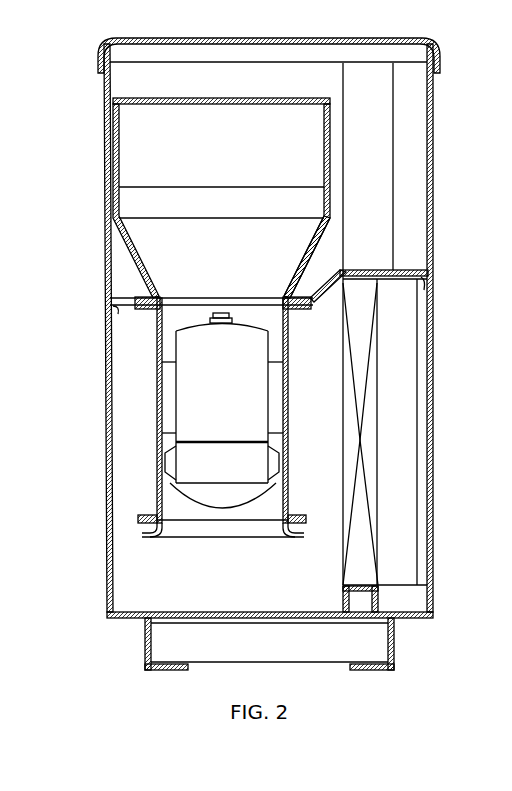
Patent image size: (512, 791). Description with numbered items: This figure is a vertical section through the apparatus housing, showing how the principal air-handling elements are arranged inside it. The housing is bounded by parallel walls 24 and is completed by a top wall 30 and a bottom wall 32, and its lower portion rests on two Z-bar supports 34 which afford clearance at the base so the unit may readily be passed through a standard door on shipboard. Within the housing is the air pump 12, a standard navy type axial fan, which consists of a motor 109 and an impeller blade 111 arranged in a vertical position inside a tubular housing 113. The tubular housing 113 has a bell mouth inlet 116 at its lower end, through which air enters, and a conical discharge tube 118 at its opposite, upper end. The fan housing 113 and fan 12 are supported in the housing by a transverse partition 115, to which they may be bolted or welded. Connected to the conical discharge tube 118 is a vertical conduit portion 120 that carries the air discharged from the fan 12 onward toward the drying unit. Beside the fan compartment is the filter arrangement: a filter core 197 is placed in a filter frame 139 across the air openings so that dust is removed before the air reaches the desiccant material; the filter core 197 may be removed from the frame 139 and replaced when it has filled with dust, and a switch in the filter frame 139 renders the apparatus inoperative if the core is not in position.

The top wall 30 is at (355, 40).
The parallel walls 24 is at (105, 410).
The vertical conduit portion 120 is at (323, 128).
The conical discharge tube 118 is at (302, 261).
The transverse partition 115 is at (327, 301).
The motor 109 is at (188, 342).
The tubular housing 113 is at (160, 387).
The impeller blade 111 is at (170, 460).
The bell mouth inlet 116 is at (144, 540).
The air pump 12 is at (189, 549).
The filter core 197 is at (352, 403).
The filter frame 139 is at (388, 501).
The bottom wall 32 is at (252, 619).
The Z-bar supports 34 is at (143, 654).